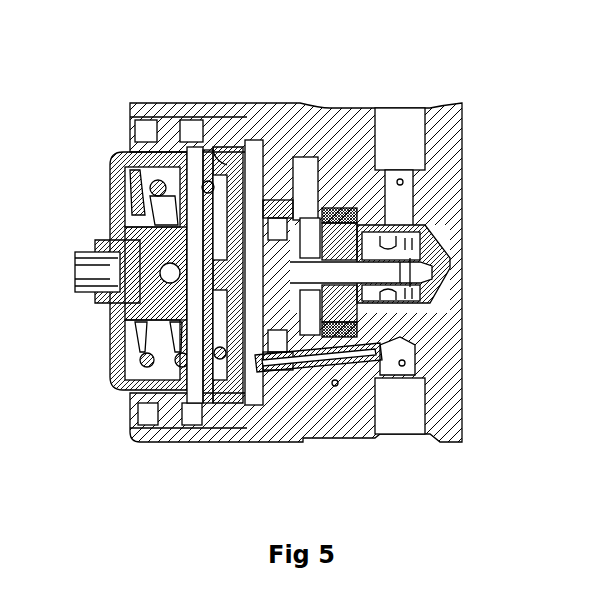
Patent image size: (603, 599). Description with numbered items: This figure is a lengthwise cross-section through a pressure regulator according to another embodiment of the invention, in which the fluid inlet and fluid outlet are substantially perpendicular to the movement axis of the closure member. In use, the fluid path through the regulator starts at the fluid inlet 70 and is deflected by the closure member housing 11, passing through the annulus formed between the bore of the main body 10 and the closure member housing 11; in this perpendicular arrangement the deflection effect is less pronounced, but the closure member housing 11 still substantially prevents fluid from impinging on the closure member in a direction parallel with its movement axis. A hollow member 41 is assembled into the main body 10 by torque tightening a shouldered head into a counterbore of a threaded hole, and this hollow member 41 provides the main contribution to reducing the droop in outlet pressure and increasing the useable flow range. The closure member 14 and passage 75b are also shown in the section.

The main body 10 is at (335, 105).
The fluid inlet 70 is at (400, 182).
The closure member housing 11 is at (452, 248).
The valve element 14 is at (440, 280).
The hollow member 41 is at (335, 383).
The fluid channel 75b is at (402, 363).